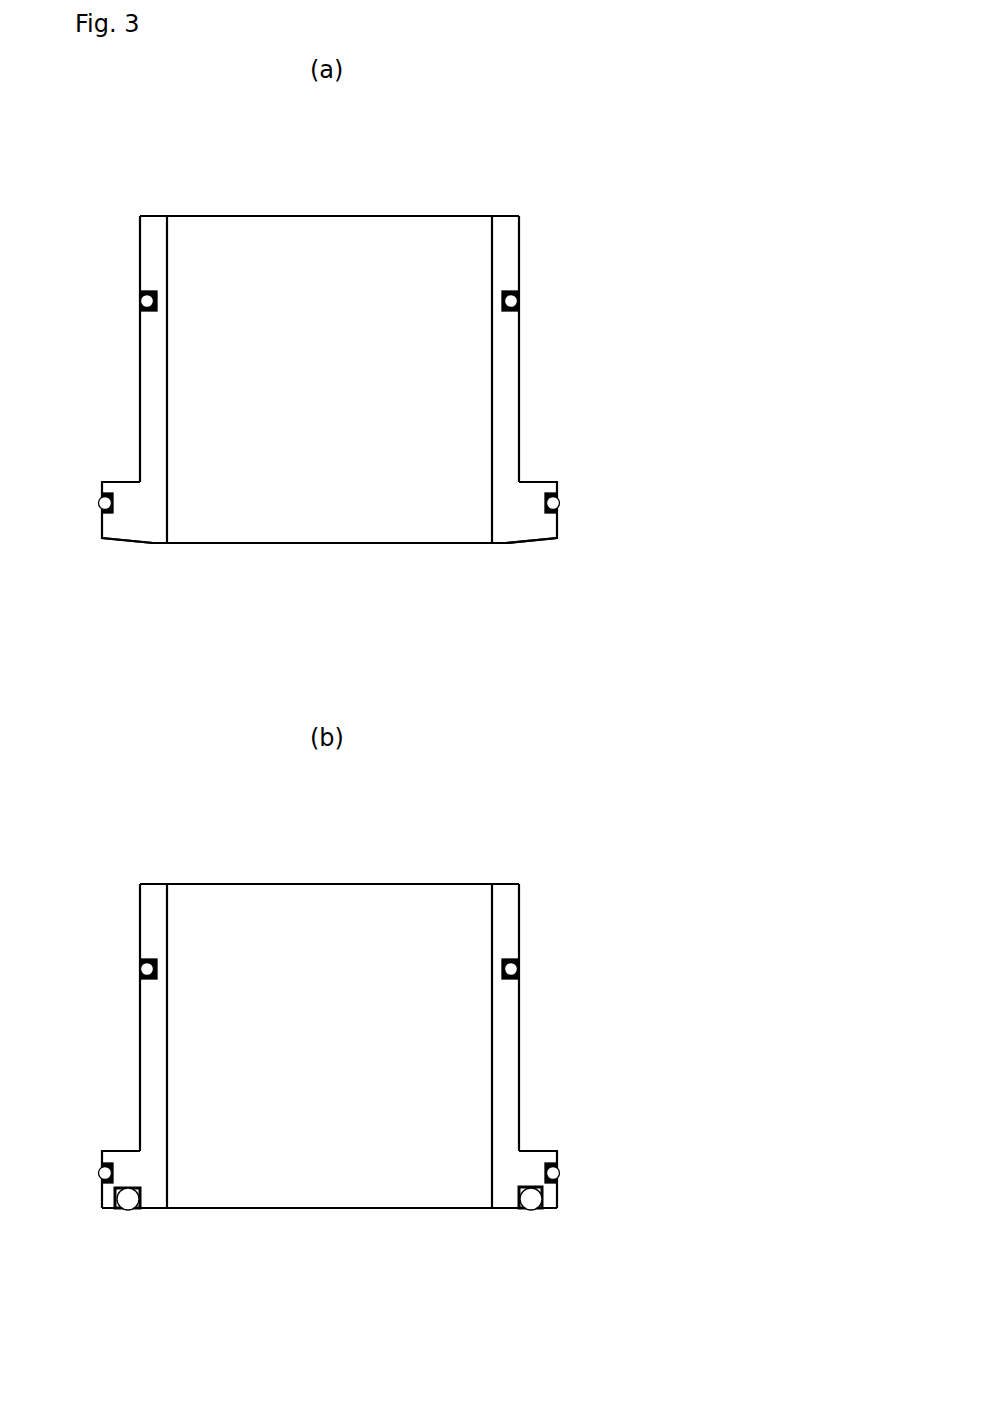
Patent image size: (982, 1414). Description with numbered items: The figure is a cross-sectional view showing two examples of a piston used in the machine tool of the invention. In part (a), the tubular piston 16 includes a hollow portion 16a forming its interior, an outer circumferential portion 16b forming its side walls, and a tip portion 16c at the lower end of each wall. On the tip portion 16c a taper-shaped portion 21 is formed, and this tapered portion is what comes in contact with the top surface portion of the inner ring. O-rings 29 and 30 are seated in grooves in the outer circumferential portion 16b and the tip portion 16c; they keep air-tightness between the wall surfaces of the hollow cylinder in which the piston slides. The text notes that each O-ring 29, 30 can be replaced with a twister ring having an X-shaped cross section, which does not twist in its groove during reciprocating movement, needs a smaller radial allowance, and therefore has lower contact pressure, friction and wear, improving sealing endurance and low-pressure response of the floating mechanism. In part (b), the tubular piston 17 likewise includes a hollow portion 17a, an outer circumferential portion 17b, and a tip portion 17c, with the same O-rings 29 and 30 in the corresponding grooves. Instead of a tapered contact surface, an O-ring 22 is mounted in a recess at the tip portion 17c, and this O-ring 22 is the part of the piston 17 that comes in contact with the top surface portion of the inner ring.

The piston 16 is at (348, 130).
The hollow portion 16a is at (424, 250).
The outer circumferential portion 16b is at (512, 341).
The tip portion 16c is at (132, 496).
The piston 17 is at (350, 798).
The hollow portion 17a is at (424, 918).
The outer circumferential portion 17b is at (512, 1009).
The tip portion 17c is at (132, 1164).
The taper-shaped portion 21 is at (115, 546).
The O-ring 22 is at (128, 1207).
The O-ring 29 is at (140, 301).
The O-ring 30 is at (98, 503).